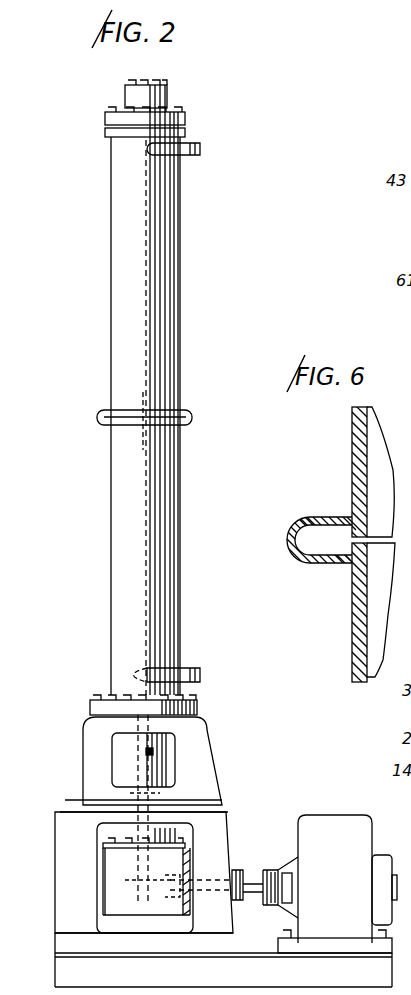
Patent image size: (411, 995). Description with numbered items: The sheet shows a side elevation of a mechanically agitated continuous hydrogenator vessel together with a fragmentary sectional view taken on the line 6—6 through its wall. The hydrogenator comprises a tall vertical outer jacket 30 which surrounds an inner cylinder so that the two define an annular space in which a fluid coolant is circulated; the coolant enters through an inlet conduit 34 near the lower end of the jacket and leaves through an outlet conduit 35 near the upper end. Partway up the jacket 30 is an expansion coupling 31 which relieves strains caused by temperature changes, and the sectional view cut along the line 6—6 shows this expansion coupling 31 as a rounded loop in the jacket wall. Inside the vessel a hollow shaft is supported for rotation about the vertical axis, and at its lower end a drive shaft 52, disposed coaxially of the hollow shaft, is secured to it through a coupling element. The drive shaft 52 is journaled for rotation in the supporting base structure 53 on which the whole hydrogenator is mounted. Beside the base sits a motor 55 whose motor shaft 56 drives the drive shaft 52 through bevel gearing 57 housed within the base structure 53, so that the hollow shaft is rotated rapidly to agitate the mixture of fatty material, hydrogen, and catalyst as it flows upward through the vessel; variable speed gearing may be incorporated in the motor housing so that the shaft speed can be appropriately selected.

In FIG. 2, the outer jacket 30 is at (125, 555).
In FIG. 6, the outer jacket 30 is at (355, 450).
In FIG. 2, the expansion coupling 31 is at (178, 408).
In FIG. 6, the expansion coupling 31 is at (308, 518).
In FIG. 2, the inlet conduit 34 is at (188, 668).
In FIG. 2, the outlet conduit 35 is at (195, 156).
In FIG. 2, the section line 6— 6 is at (141, 421).
In FIG. 2, the drive shaft 52 is at (150, 798).
In FIG. 2, the supporting base structure 53 is at (75, 830).
In FIG. 2, the motor 55 is at (312, 828).
In FIG. 2, the motor shaft 56 is at (250, 870).
In FIG. 2, the bevel gearing 57 is at (165, 886).